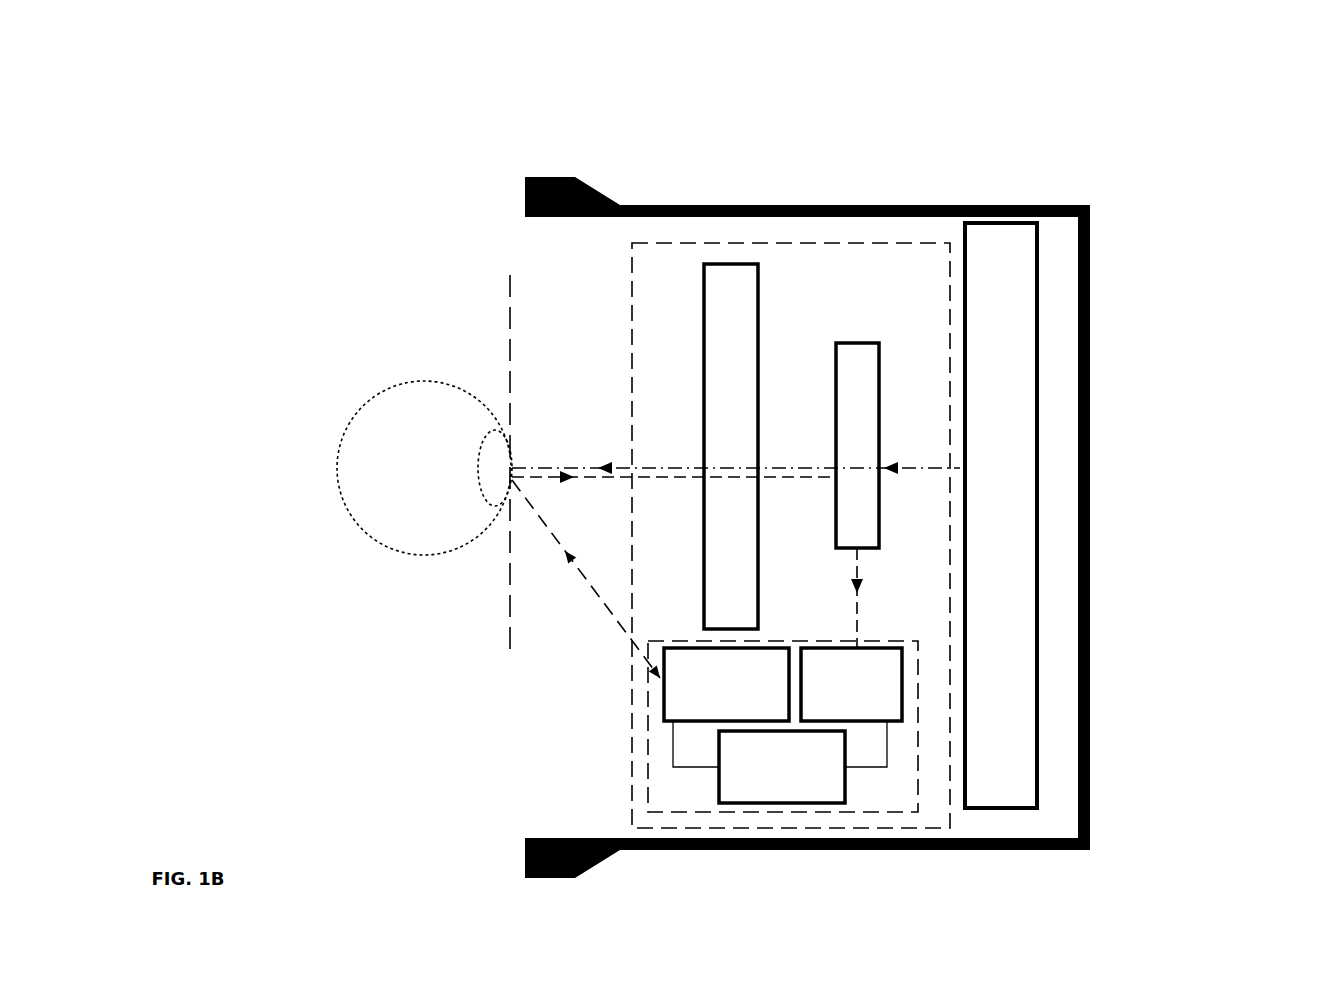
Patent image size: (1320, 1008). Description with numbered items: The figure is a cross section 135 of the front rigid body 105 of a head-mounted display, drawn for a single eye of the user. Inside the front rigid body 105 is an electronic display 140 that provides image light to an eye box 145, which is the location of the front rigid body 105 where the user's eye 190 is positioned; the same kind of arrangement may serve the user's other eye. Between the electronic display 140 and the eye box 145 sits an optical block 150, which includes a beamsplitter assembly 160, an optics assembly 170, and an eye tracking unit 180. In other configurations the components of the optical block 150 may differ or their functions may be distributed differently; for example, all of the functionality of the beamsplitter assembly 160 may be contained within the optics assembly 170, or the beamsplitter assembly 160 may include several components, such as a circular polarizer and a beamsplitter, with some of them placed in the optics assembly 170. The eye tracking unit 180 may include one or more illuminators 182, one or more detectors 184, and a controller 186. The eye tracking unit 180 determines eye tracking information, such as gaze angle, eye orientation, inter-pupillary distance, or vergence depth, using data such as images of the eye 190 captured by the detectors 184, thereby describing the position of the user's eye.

The cross section 135 is at (165, 57).
The front rigid body 105 is at (1095, 480).
The electronic display 140 is at (1037, 259).
The optical block 150 is at (633, 236).
The optics assembly 170 is at (730, 264).
The beamsplitter assembly 160 is at (857, 343).
The eye 190 is at (408, 492).
The eye box 145 is at (507, 595).
The eye tracking unit 180 is at (667, 726).
The illuminator 182 is at (710, 707).
The detector 184 is at (835, 707).
The controller 186 is at (782, 767).